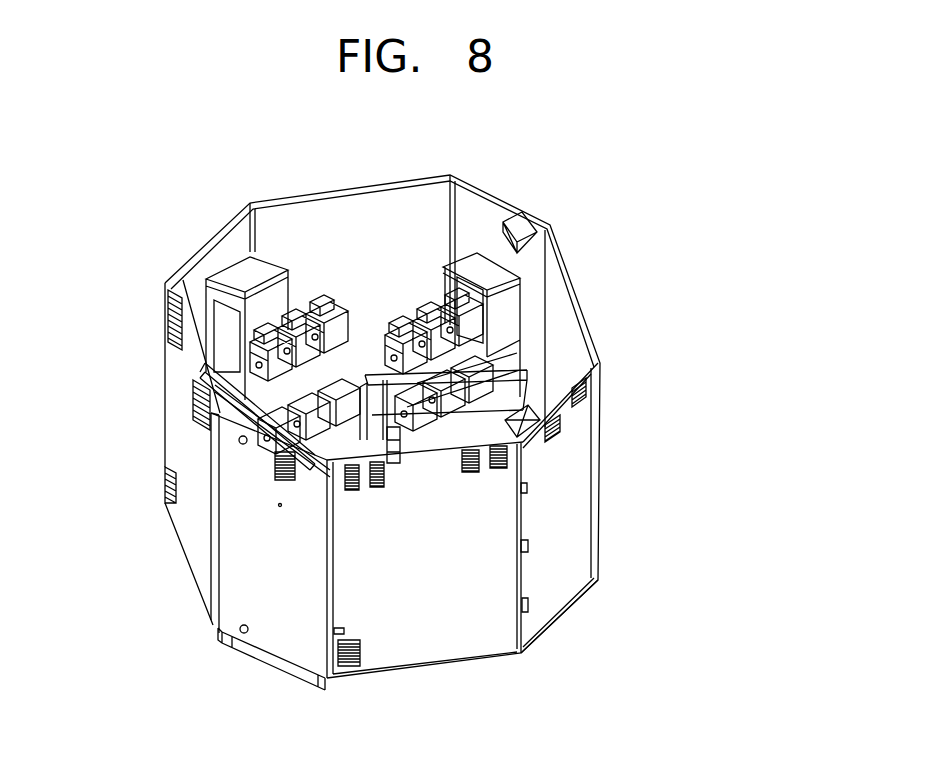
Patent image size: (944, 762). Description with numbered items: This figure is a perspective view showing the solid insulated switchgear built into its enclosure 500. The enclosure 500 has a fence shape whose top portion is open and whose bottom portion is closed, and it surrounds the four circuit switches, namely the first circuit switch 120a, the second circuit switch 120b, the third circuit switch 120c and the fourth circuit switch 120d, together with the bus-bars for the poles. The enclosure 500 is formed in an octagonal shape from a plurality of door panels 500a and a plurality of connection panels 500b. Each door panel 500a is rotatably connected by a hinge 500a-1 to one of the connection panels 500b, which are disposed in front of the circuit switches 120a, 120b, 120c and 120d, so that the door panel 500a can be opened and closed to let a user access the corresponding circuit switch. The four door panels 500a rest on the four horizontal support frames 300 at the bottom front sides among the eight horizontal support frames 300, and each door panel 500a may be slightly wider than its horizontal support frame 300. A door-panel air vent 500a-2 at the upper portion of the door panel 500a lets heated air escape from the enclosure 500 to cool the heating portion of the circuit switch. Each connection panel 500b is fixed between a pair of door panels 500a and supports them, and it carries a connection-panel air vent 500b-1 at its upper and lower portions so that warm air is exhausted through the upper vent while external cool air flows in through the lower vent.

The first circuit switch 120a is at (237, 272).
The second circuit switch 120b is at (490, 280).
The third circuit switch 120c is at (515, 418).
The fourth circuit switch 120d is at (245, 432).
The horizontal support frame 300 is at (270, 658).
The enclosure 500 is at (433, 458).
The door panel 500a is at (611, 518).
The hinge 500a-1 is at (527, 487).
The door-panel air vent 500a-2 is at (557, 430).
The connection panel 500b is at (450, 588).
The connection-panel air vent 500b-1 is at (355, 490).